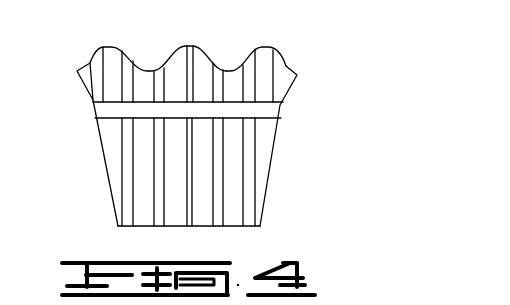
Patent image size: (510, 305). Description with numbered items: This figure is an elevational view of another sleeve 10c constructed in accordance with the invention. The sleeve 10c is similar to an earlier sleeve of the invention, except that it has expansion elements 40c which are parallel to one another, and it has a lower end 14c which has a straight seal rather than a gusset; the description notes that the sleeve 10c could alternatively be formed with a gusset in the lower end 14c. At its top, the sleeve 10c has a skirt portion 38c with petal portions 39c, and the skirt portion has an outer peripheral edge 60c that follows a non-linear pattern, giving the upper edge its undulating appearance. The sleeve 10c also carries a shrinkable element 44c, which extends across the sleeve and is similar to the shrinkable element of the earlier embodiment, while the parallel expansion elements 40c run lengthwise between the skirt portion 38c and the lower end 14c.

The sleeve 10c is at (294, 138).
The lower end 14c is at (240, 226).
The skirt portion 38c is at (289, 58).
The petal portions 39c is at (113, 48).
The expansion elements 40c is at (121, 172).
The shrinkable element 44c is at (282, 107).
The outer peripheral edge 60c is at (268, 47).